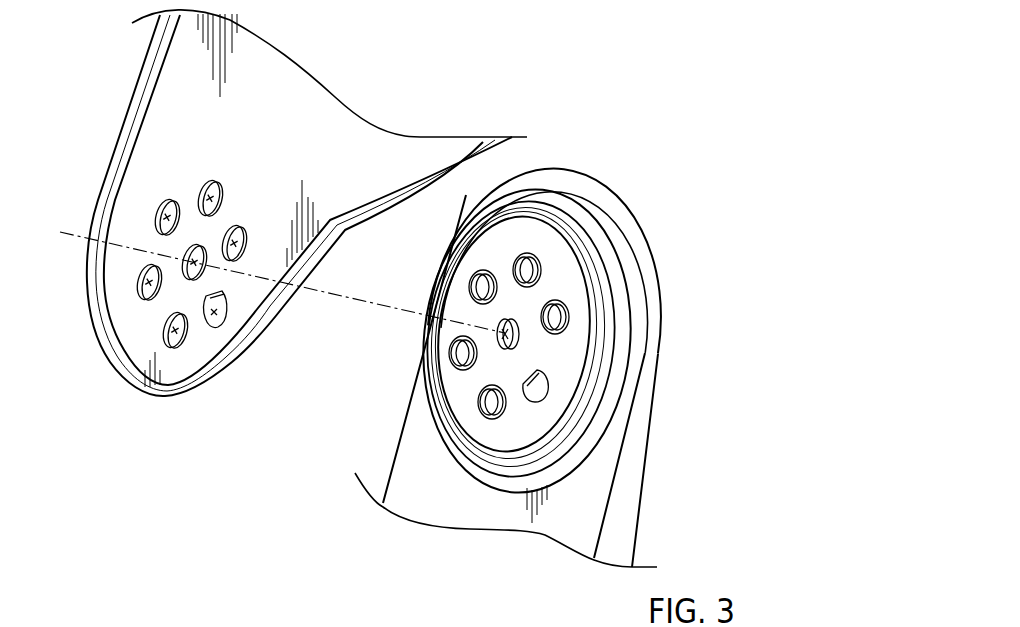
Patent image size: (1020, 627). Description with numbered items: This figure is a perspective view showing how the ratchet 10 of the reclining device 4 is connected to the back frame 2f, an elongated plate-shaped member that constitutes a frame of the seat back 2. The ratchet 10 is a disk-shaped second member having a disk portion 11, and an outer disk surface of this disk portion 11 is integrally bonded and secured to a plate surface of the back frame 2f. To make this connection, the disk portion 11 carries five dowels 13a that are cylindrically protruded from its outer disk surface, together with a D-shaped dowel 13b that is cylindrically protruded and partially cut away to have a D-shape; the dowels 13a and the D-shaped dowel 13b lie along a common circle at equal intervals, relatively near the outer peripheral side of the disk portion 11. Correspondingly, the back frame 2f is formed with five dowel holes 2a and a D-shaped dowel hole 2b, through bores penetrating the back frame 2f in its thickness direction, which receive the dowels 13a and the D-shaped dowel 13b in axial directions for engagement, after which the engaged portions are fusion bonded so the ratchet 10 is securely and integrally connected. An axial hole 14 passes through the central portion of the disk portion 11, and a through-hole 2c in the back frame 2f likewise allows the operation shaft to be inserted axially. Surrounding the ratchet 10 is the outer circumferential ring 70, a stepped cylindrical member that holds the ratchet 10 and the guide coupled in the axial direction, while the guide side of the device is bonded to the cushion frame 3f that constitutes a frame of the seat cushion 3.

The seat back 2 is at (307, 203).
The back frame 2f is at (293, 103).
The dowel holes 2a is at (168, 202).
The D-shaped dowel hole 2b is at (222, 303).
The through-hole 2c is at (194, 246).
The seat cushion 3 is at (542, 361).
The cushion frame 3f is at (597, 475).
The reclining device 4 is at (551, 170).
The ratchet 10 is at (503, 232).
The disk portion 11 is at (560, 270).
The dowels 13a is at (523, 270).
The D-shaped dowel 13b is at (560, 400).
The axial hole 14 is at (503, 333).
The outer circumferential ring 70 is at (588, 217).